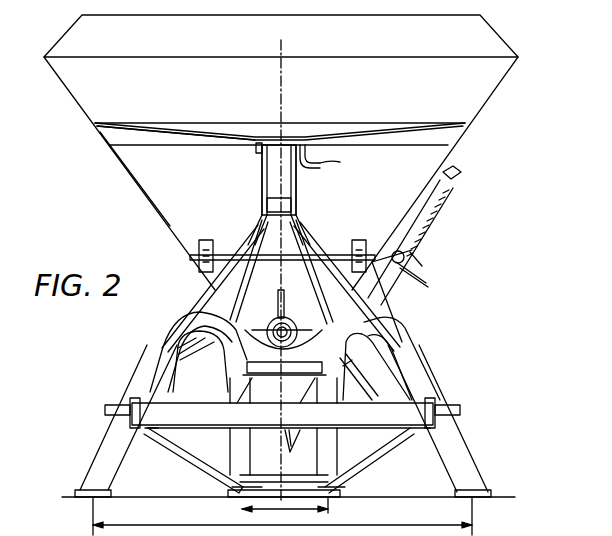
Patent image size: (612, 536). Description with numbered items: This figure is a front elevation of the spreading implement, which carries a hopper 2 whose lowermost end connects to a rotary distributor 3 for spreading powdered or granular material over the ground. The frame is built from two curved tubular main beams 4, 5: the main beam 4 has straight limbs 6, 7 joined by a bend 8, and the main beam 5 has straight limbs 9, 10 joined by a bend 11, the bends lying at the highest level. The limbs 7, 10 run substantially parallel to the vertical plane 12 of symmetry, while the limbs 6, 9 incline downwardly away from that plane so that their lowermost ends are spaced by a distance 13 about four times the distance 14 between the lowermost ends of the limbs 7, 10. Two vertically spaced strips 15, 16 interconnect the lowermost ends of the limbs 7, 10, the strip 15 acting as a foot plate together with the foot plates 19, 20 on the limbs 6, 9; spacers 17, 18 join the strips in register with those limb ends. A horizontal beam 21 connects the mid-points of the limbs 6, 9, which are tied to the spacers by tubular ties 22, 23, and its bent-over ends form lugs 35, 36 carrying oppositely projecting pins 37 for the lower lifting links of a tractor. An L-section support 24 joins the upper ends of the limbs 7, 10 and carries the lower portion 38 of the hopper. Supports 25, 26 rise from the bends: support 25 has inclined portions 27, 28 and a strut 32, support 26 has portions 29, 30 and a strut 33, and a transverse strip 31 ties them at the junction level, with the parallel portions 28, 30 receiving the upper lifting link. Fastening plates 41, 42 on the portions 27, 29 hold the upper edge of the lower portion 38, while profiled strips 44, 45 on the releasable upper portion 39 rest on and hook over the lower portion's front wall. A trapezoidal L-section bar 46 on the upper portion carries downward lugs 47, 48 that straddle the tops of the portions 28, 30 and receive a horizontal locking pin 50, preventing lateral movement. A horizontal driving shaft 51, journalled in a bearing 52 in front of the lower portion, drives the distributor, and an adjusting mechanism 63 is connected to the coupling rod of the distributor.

The hopper 2 is at (130, 177).
The rotary distributor 3 is at (358, 378).
The main beam 4 is at (160, 333).
The main beam 5 is at (413, 360).
The straight limb 6 is at (113, 434).
The straight limb 7 is at (249, 447).
The bend 8 is at (204, 362).
The straight limb 9 is at (468, 445).
The straight limb 10 is at (330, 426).
The bend 11 is at (348, 333).
The vertical plane of symmetry 12 is at (284, 76).
The distance 13 is at (370, 525).
The distance 14 is at (244, 511).
The strip 15 is at (228, 500).
The strip 16 is at (302, 446).
The spacer 17 is at (230, 486).
The spacer 18 is at (342, 492).
The foot plate 19 is at (84, 490).
The foot plate 20 is at (490, 492).
The beam 21 is at (160, 430).
The tubular tie 22 is at (195, 455).
The tubular tie 23 is at (380, 450).
The support 24 is at (246, 372).
The support 25 is at (262, 196).
The support 26 is at (306, 232).
The portion 27 is at (244, 286).
The portion 28 is at (263, 168).
The portion 29 is at (326, 310).
The portion 30 is at (297, 184).
The transverse strip 31 is at (292, 208).
The strut 32 is at (204, 288).
The strut 33 is at (388, 318).
The lug 35 is at (132, 403).
The lug 36 is at (438, 404).
The pin 37 is at (105, 410).
The lower portion of the hopper 38 is at (198, 262).
The upper portion of the hopper 39 is at (152, 200).
The fastening plate 41 is at (248, 248).
The fastening plate 42 is at (304, 265).
The profiled strip 44 is at (206, 240).
The profiled strip 45 is at (359, 240).
The bar 46 is at (356, 127).
The lug 47 is at (256, 148).
The lug 48 is at (311, 169).
The locking pin 50 is at (330, 160).
The driving shaft 51 is at (276, 323).
The bearing 52 is at (312, 341).
The adjusting mechanism 63 is at (446, 204).